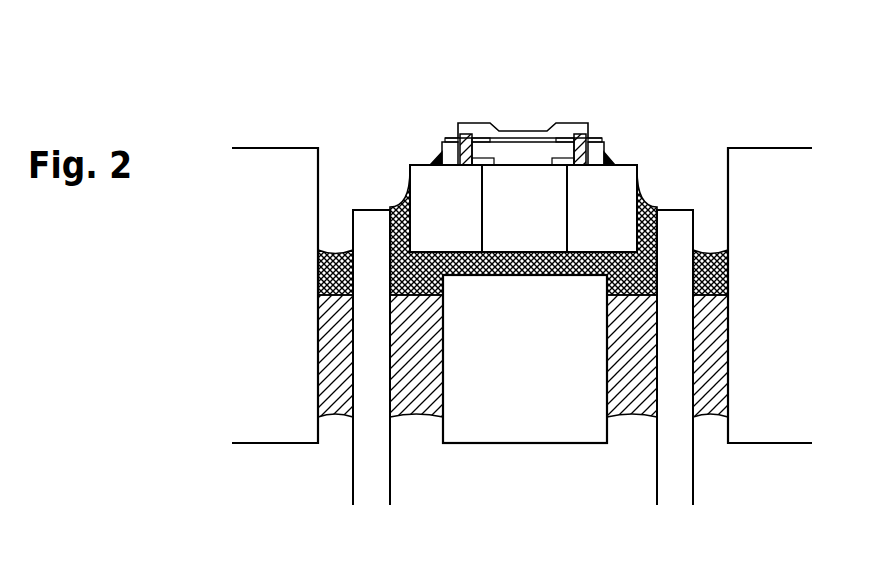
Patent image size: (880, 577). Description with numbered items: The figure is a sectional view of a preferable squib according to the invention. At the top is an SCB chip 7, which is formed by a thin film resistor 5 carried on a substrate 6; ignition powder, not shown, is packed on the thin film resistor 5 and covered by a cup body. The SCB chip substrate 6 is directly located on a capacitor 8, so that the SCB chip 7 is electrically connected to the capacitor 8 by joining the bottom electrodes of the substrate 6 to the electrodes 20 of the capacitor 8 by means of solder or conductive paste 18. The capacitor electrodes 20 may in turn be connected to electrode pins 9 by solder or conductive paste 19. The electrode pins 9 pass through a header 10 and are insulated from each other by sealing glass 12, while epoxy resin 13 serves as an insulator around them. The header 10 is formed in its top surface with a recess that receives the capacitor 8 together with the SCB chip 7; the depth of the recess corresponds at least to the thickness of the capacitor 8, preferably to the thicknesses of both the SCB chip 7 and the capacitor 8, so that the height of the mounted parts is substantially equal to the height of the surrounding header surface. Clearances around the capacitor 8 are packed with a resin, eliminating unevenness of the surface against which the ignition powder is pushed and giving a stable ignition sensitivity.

The thin film resistor 5 is at (519, 132).
The substrate 6 is at (558, 153).
The SCB chip 7 is at (519, 91).
The capacitor 8 is at (548, 213).
The electrode pins 9 is at (677, 469).
The header 10 is at (553, 405).
The sealing glass 12 is at (337, 375).
The epoxy resin 13 is at (657, 297).
The solder or conductive paste 18 is at (442, 162).
The solder or conductive paste 19 is at (650, 180).
The electrodes of the capacitor 20 is at (437, 200).